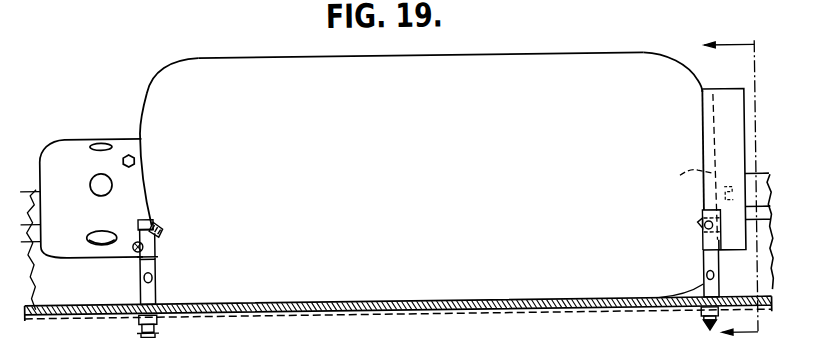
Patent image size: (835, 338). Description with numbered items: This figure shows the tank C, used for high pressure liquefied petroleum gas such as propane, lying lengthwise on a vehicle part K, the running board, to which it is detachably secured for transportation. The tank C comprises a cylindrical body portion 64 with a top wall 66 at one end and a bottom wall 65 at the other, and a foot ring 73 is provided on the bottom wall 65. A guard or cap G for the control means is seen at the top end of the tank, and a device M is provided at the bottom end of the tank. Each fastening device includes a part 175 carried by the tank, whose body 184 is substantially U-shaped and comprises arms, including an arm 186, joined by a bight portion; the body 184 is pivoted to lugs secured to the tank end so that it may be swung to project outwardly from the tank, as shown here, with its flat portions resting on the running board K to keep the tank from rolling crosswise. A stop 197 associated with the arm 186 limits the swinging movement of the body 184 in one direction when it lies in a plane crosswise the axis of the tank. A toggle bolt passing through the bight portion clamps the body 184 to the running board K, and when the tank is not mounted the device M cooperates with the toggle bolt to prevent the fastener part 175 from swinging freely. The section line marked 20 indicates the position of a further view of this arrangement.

The tank C is at (558, 60).
The top wall 66 is at (163, 83).
The bottom wall 65 is at (684, 74).
The foot ring 73 is at (712, 99).
The section line 20 is at (736, 179).
The means for holding the parts of fastening devices M is at (652, 203).
The guard or cap G is at (75, 241).
The vehicle part K is at (302, 300).
The cylindrical body portion 64 is at (489, 301).
The part carried by the tank 175 is at (138, 263).
The body 184 is at (157, 297).
The stop 197 is at (702, 274).
The arm 186 is at (700, 306).